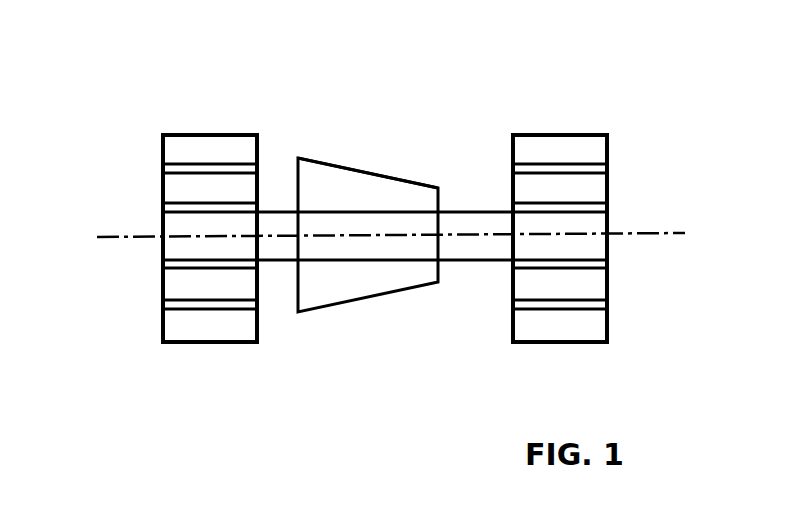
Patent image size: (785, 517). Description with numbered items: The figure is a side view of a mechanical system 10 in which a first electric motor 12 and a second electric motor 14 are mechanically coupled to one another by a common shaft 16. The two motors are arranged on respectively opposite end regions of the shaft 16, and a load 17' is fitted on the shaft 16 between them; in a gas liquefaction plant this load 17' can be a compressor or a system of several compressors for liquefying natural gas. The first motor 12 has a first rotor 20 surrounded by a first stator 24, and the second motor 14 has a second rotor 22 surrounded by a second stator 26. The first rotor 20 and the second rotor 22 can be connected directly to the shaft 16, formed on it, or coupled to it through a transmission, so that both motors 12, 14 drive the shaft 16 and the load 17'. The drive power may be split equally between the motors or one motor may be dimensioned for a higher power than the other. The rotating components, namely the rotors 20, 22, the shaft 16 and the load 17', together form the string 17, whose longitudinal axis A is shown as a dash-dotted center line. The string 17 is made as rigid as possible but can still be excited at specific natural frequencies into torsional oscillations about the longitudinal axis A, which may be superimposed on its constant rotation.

The mechanical system 10 is at (300, 381).
The first electric motor 12 is at (141, 150).
The second electric motor 14 is at (627, 158).
The common shaft 16 is at (492, 221).
The string 17 is at (368, 158).
The load 17' is at (368, 106).
The first rotor 20 is at (179, 185).
The second rotor 22 is at (537, 188).
The first stator 24 is at (238, 142).
The second stator 26 is at (588, 143).
The longitudinal axis A is at (113, 237).